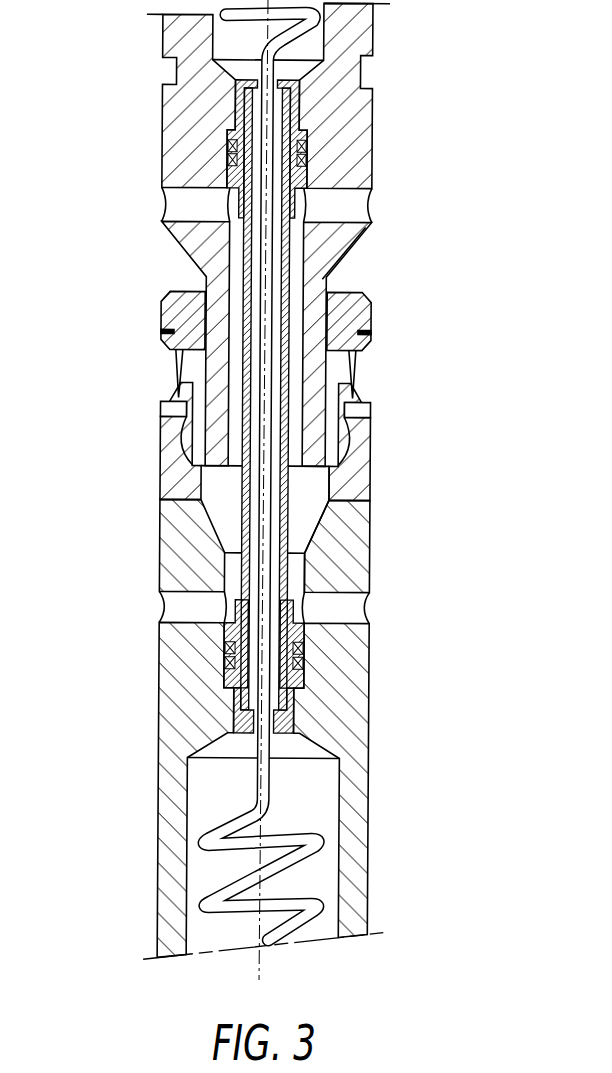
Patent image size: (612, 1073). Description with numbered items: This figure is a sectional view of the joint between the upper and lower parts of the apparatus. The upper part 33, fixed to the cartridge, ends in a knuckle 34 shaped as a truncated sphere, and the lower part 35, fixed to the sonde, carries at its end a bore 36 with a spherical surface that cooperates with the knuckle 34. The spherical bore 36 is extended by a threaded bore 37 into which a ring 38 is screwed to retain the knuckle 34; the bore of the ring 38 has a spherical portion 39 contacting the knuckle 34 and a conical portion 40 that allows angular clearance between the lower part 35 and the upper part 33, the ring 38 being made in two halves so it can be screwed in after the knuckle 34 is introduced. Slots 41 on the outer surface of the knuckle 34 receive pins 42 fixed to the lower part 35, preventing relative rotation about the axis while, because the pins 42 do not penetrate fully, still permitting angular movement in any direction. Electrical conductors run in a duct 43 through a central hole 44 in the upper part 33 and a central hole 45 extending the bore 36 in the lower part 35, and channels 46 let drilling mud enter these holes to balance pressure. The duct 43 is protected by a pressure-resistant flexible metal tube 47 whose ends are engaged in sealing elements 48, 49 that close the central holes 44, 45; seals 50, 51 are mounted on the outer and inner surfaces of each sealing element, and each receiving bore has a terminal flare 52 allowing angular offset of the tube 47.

The upper part 33 is at (374, 132).
The knuckle 34 is at (320, 465).
The lower part 35 is at (374, 727).
The bore 36 is at (331, 468).
The threaded bore 37 is at (355, 390).
The ring 38 is at (362, 322).
The spherical portion 39 is at (334, 372).
The conical portion 40 is at (172, 302).
The slots 41 is at (191, 443).
The pins 42 is at (172, 402).
The duct 43 is at (262, 432).
The central hole 44 is at (238, 243).
The central hole 45 is at (212, 520).
The channels 46 is at (171, 607).
The flexible metal tube 47 is at (247, 371).
The sealing element 48 is at (234, 134).
The sealing element 49 is at (231, 678).
The seal 50 is at (231, 647).
The seal 51 is at (234, 700).
The terminal flare 52 is at (292, 615).